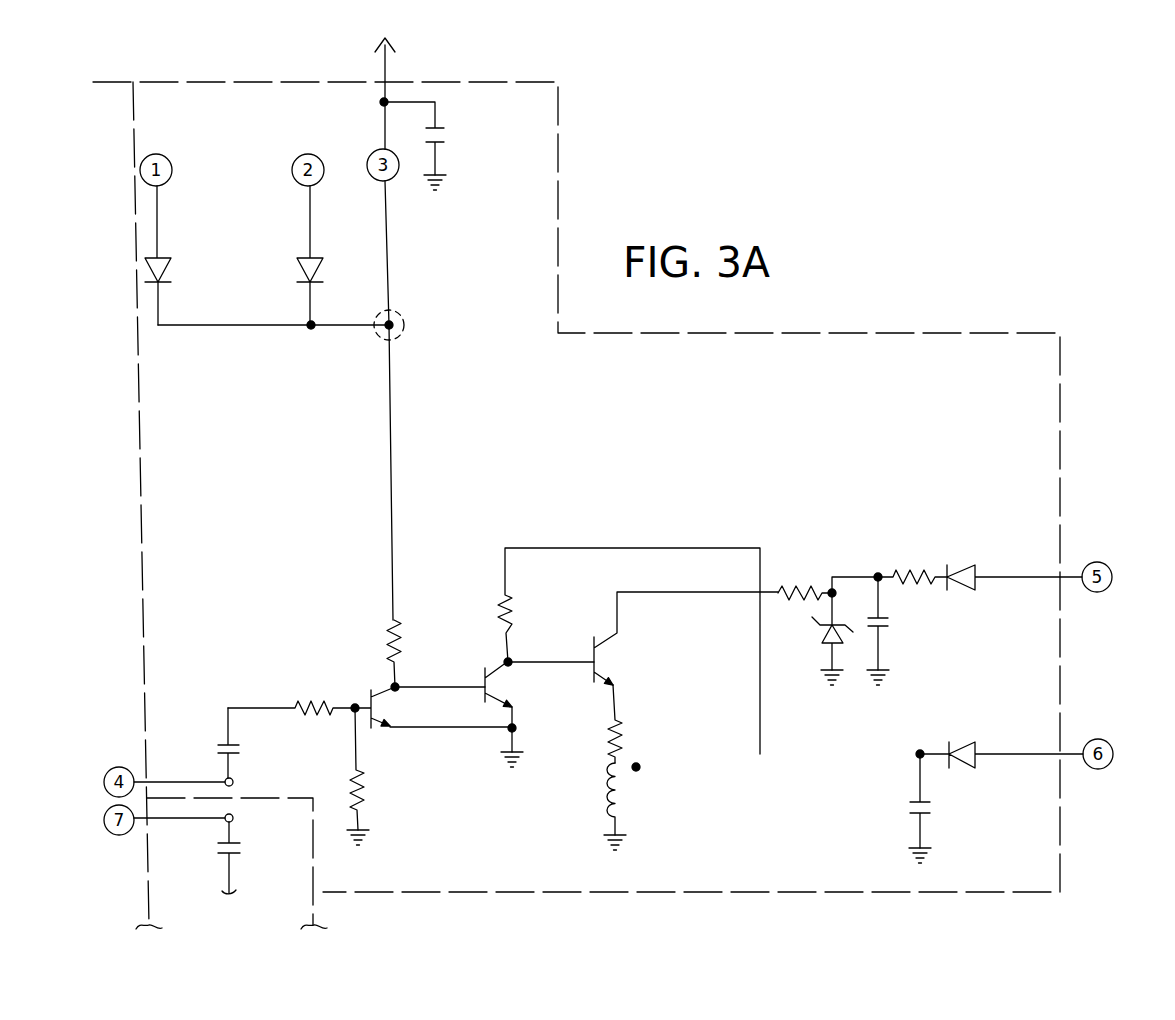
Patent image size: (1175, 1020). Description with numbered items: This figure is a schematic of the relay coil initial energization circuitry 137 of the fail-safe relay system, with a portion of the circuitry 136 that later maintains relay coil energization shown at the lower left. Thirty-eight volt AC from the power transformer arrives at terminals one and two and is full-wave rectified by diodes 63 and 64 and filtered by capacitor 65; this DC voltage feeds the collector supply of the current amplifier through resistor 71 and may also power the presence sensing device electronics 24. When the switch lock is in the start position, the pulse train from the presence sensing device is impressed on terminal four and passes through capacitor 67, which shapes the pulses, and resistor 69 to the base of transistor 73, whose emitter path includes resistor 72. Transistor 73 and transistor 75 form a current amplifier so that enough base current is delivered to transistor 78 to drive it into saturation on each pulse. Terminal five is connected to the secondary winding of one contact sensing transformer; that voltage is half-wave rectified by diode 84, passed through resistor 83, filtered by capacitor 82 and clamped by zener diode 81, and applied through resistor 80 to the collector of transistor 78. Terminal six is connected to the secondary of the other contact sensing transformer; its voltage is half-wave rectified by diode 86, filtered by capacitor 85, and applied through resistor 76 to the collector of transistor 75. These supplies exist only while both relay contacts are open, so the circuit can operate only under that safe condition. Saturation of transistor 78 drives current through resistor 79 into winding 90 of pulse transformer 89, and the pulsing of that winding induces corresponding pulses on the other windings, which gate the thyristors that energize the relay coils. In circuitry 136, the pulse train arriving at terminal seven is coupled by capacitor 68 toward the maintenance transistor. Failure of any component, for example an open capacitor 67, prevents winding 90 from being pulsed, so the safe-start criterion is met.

The presence sensing device electronics 24 is at (386, 58).
The diode 63 is at (172, 268).
The diode 64 is at (324, 268).
The capacitor 65 is at (445, 148).
The capacitor 67 is at (240, 752).
The capacitor 68 is at (240, 856).
The resistor 69 is at (312, 703).
The resistor 71 is at (404, 648).
The resistor 72 is at (366, 790).
The transistor 73 is at (376, 730).
The transistor 75 is at (480, 679).
The resistor 76 is at (514, 613).
The transistor 78 is at (590, 677).
The resistor 79 is at (627, 738).
The resistor 80 is at (792, 590).
The zener diode 81 is at (822, 636).
The capacitor 82 is at (890, 628).
The resistor 83 is at (912, 572).
The diode 84 is at (960, 570).
The capacitor 85 is at (928, 801).
The diode 86 is at (963, 746).
The pulse transformer 89 is at (601, 798).
The winding 90 is at (627, 796).
The circuitry 136 is at (130, 867).
The relay coil initial energization circuitry 137 is at (135, 640).